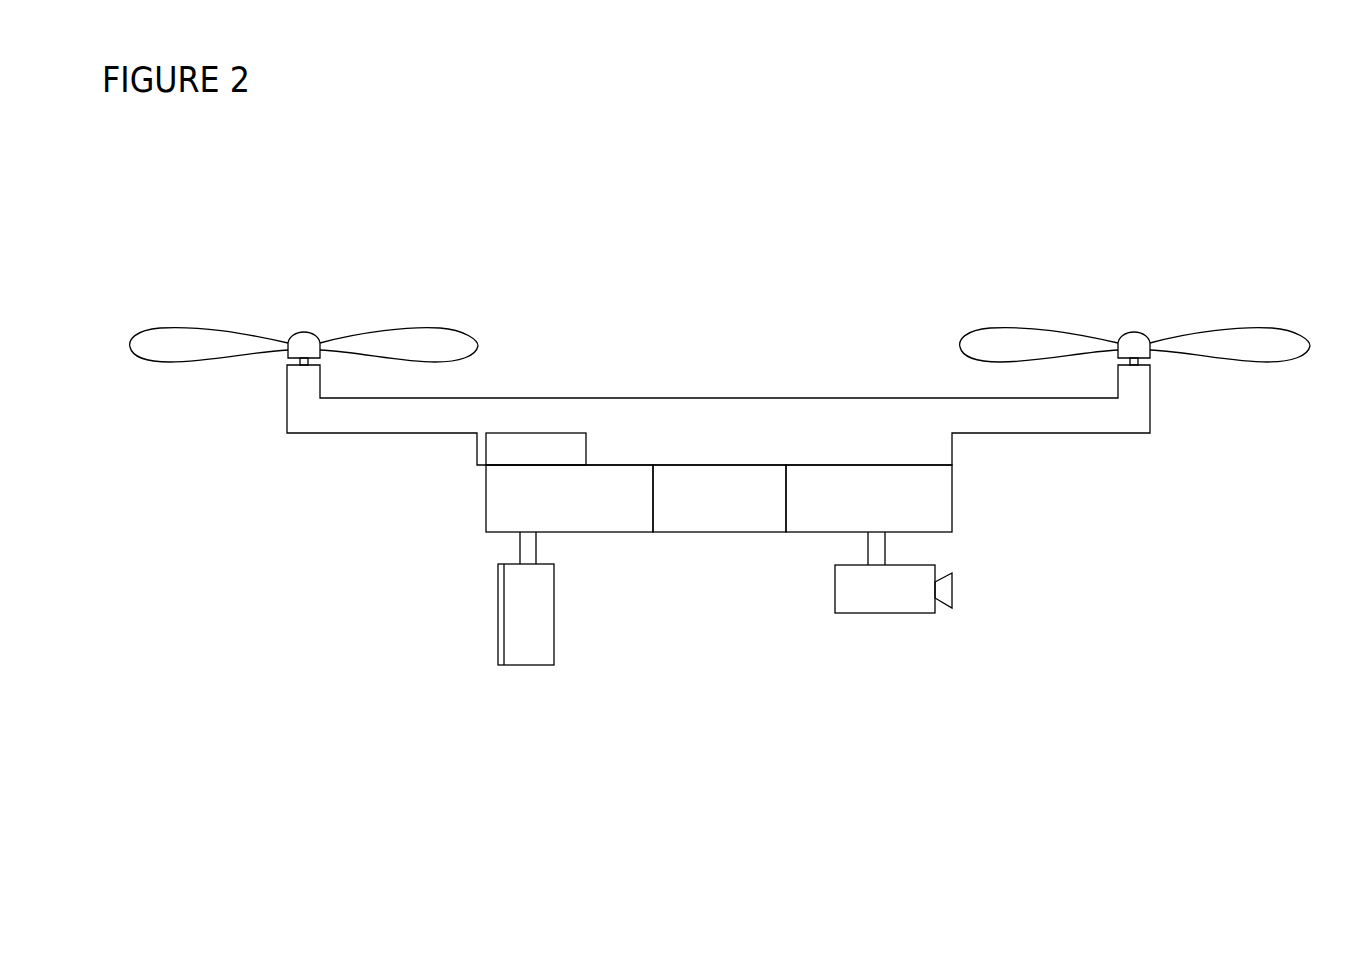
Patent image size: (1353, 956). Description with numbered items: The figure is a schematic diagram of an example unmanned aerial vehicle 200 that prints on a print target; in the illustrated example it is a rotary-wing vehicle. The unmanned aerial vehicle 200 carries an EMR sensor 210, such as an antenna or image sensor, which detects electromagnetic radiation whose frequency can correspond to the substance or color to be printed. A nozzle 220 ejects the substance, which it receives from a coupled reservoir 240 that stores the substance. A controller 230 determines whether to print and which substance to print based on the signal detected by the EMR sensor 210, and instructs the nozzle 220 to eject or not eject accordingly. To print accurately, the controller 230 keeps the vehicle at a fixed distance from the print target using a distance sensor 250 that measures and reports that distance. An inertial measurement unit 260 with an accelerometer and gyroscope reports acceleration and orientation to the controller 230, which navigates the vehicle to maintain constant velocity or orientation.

The unmanned aerial vehicle 200 is at (1143, 178).
The EMR sensor 210 is at (864, 601).
The nozzle 220 is at (547, 625).
The controller 230 is at (847, 525).
The reservoir 240 is at (549, 525).
The distance sensor 250 is at (515, 461).
The inertial measurement unit (IMU) 260 is at (698, 525).